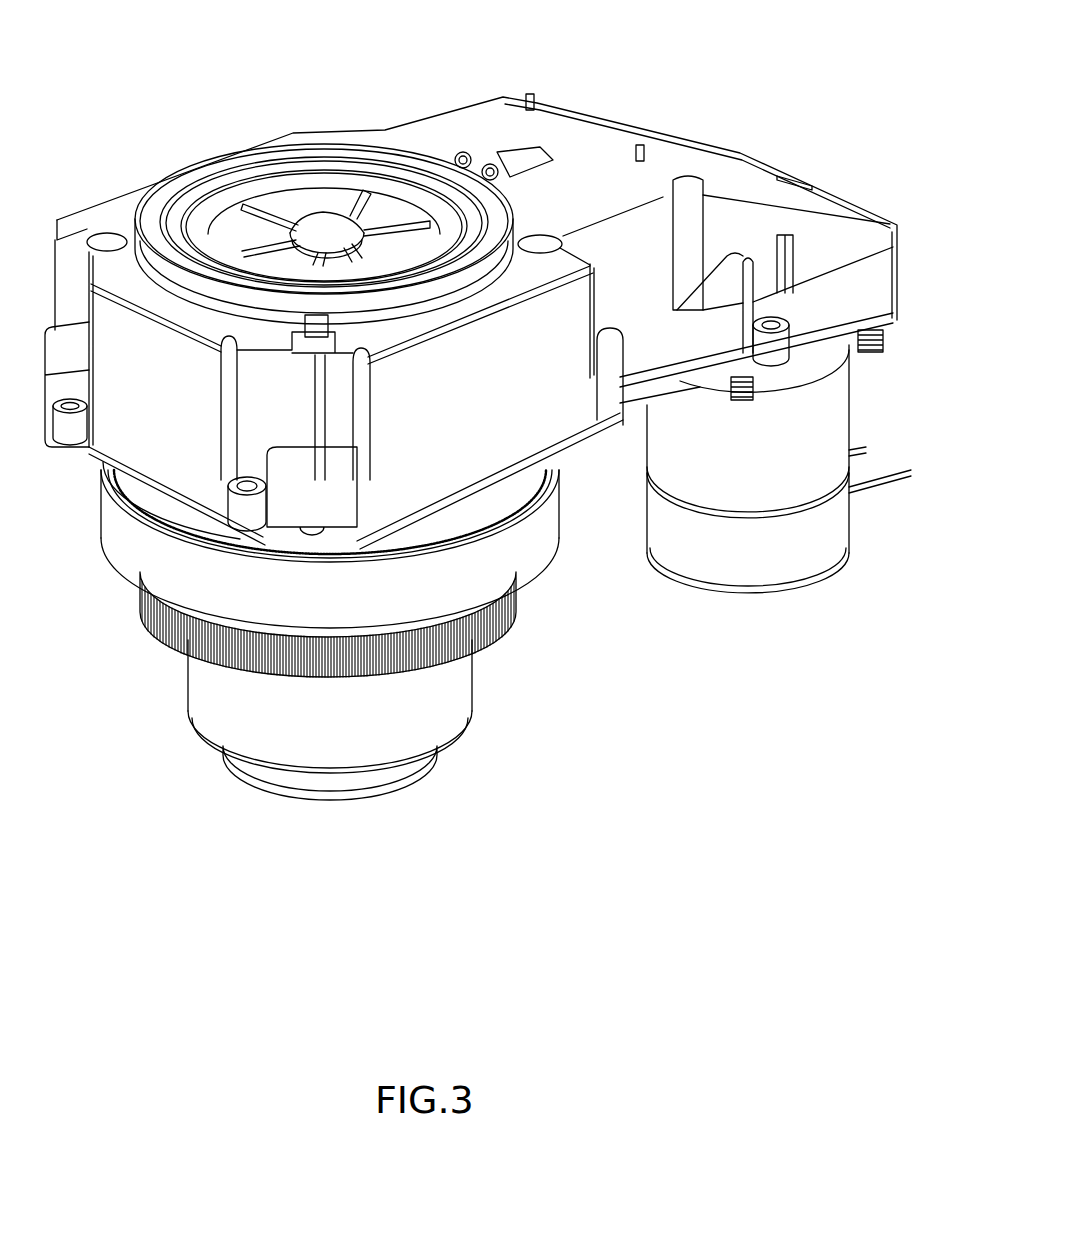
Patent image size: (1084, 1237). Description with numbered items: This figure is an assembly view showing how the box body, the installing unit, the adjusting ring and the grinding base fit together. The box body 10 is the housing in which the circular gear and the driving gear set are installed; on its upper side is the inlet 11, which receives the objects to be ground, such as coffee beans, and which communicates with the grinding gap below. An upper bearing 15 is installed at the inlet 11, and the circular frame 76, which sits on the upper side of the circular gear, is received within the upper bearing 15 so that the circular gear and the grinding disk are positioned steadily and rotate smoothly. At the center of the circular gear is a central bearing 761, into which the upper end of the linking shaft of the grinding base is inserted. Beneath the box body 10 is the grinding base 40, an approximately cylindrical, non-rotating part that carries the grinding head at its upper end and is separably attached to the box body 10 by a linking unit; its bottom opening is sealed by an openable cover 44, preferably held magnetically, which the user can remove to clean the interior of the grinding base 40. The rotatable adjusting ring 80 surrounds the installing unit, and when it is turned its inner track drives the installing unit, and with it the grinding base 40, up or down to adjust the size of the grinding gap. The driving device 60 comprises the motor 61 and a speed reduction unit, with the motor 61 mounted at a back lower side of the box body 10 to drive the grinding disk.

The box body 10 is at (612, 111).
The inlet 11 is at (279, 183).
The upper bearing 15 is at (180, 207).
The circular frame 76 is at (227, 197).
The central bearing 761 is at (318, 230).
The adjusting ring 80 is at (547, 560).
The grinding base 40 is at (486, 665).
The cover 44 is at (473, 697).
The driving device 60 is at (872, 534).
The motor 61 is at (780, 587).